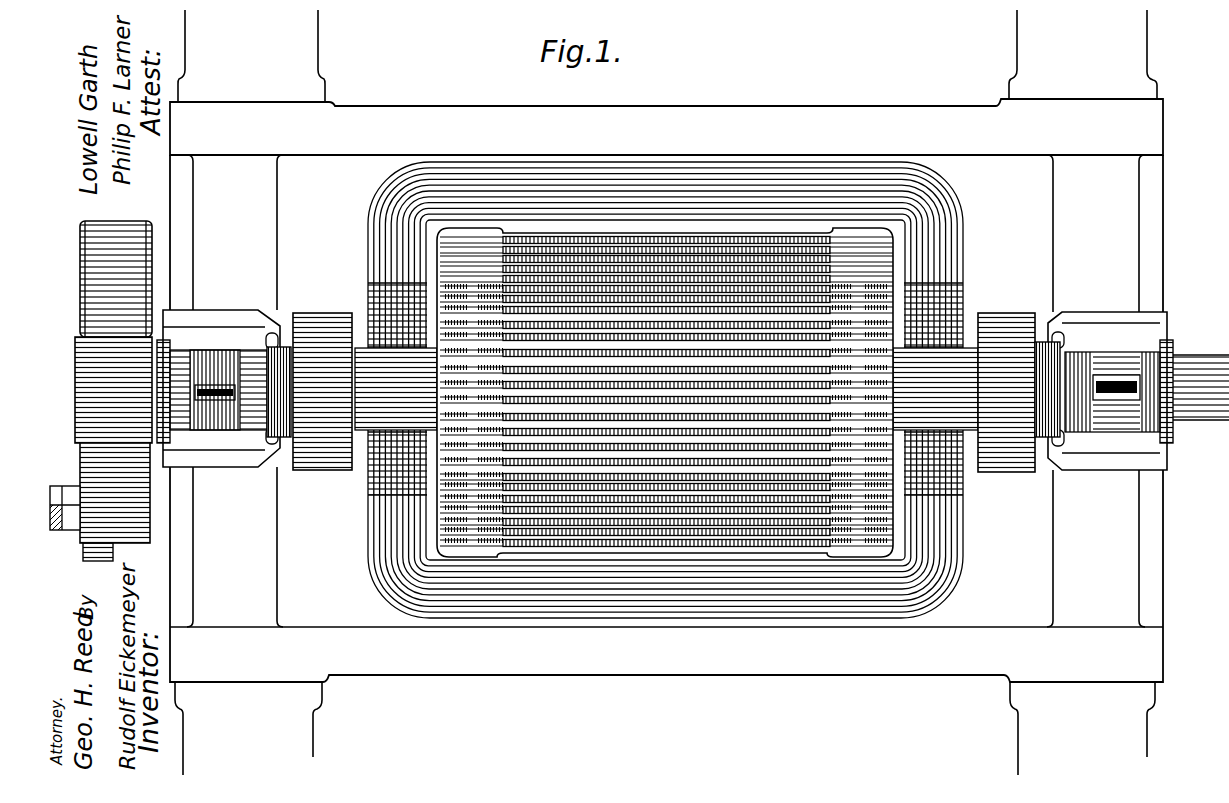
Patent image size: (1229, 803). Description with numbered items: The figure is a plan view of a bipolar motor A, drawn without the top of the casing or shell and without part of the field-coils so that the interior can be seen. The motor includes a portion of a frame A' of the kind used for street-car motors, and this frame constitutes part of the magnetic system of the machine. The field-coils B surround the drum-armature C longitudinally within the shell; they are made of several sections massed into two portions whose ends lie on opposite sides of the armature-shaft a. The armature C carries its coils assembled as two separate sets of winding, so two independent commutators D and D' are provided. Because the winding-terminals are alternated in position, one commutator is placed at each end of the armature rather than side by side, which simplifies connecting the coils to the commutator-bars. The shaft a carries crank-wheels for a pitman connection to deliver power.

The motor A is at (666, 418).
The frame A' is at (666, 127).
The field-coils B is at (658, 179).
The armature C is at (605, 537).
The commutator D is at (322, 381).
The commutator D' is at (1006, 382).
The shaft a is at (792, 383).